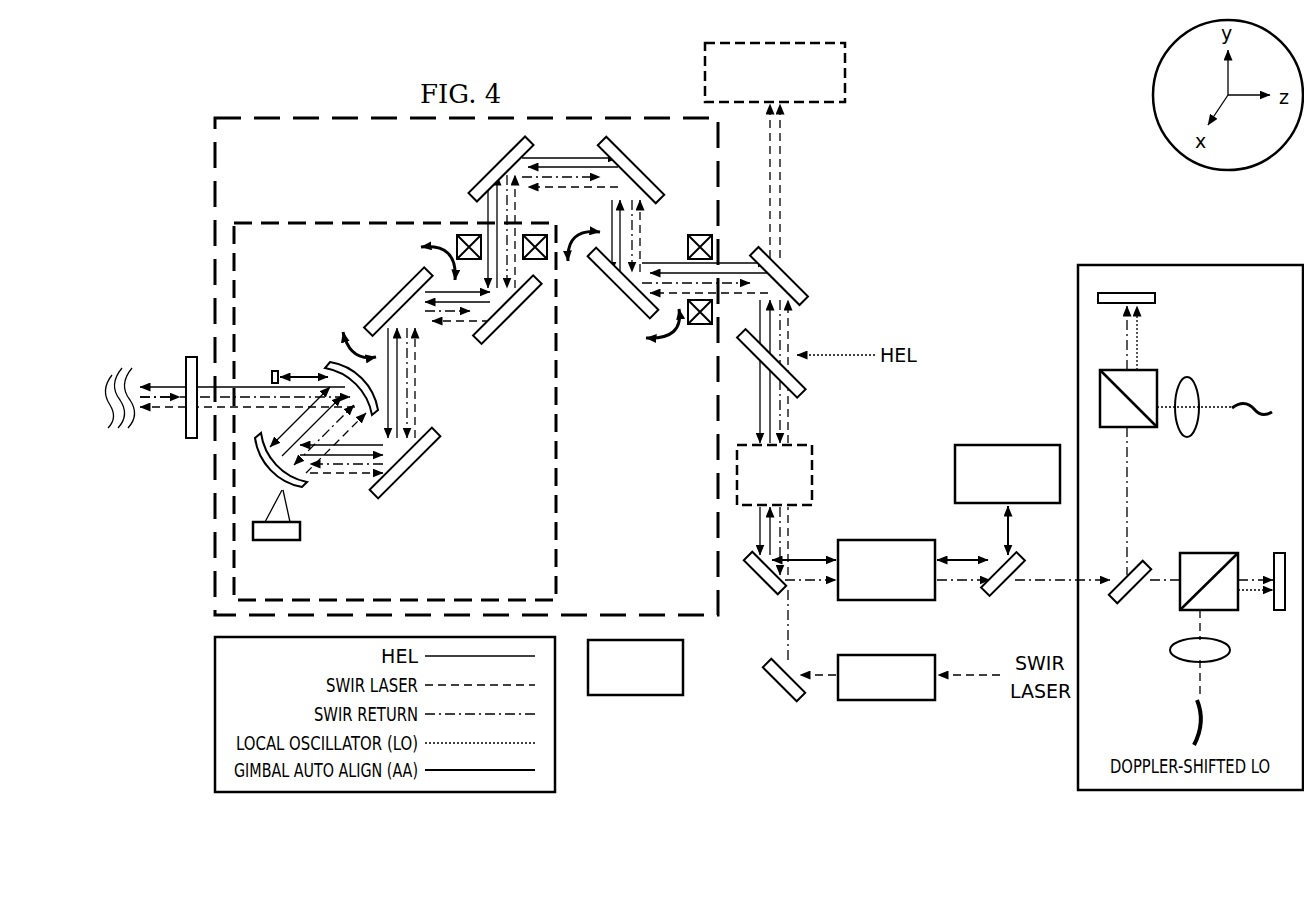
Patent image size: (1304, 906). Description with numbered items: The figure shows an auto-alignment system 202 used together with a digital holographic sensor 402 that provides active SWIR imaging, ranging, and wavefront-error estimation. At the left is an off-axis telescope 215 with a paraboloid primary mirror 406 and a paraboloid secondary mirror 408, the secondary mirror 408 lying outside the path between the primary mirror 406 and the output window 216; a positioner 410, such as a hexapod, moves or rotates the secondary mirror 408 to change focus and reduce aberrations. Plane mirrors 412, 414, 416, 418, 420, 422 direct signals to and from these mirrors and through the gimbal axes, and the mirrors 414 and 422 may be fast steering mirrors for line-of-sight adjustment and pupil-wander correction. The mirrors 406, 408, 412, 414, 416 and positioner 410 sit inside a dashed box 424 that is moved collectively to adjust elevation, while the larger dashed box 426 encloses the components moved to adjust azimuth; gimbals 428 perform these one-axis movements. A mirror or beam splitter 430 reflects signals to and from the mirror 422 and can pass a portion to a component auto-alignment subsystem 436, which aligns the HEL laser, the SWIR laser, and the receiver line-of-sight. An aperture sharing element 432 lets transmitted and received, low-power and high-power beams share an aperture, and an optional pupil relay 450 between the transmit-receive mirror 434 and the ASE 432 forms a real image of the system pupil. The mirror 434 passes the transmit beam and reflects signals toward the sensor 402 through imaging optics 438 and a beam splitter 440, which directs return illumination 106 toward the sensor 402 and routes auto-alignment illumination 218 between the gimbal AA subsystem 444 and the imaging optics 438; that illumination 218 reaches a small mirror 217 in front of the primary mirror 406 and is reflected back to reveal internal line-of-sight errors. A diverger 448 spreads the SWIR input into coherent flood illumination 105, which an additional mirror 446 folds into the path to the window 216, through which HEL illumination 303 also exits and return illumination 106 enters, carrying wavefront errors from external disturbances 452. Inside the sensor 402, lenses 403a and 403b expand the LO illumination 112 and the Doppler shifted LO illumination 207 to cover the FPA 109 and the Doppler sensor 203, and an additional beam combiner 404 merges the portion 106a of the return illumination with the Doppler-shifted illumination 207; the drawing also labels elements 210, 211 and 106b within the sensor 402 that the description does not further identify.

The auto-alignment system 202 is at (1028, 64).
The dashed box 426 is at (304, 116).
The dashed box 424 is at (298, 221).
The mirror 418 is at (495, 162).
The mirror 420 is at (655, 162).
The mirror 414 is at (392, 296).
The mirror 416 is at (480, 338).
The mirror 412 is at (425, 470).
The mirror 422 is at (612, 290).
The mirror or beam splitter 430 is at (797, 284).
The aperture sharing element 432 is at (803, 392).
The transmit-receive mirror 434 is at (758, 592).
The beam splitter 440 is at (992, 594).
The additional mirror 446 is at (772, 684).
The beam splitter 210 is at (1135, 598).
The primary mirror 406 is at (330, 362).
The secondary mirror 408 is at (302, 487).
The positioner 410 is at (278, 541).
The mirror 217 is at (272, 371).
The output window 216 is at (190, 356).
The disturbances 452 is at (116, 362).
The off-axis telescope 215 is at (382, 524).
The component auto-alignment subsystem 436 is at (848, 67).
The pupil relay 450 is at (814, 470).
The gimbal AA subsystem 444 is at (1020, 445).
The imaging optics 438 is at (890, 601).
The diverger 448 is at (890, 701).
The gimbals 428 is at (636, 696).
The HEL illumination 303 is at (838, 354).
The auto-alignment illumination 218 is at (1004, 548).
The reflected or return illumination 106 is at (812, 583).
The coherent flood illumination 105 is at (808, 678).
The digital holographic sensor 402 is at (1194, 261).
The Doppler sensor 203 is at (1157, 298).
The beam splitter cube 211 is at (1115, 368).
The lens 403a is at (1187, 378).
The LO illumination 112 is at (1252, 405).
The SWIR return beam portion 106b is at (1130, 464).
The portion of the reflected or return illumination 106a is at (1150, 575).
The additional beam combiner 404 is at (1210, 552).
The FPA 109 is at (1280, 611).
The lens 403b is at (1170, 652).
The Doppler shifted LO illumination 207 is at (1202, 725).